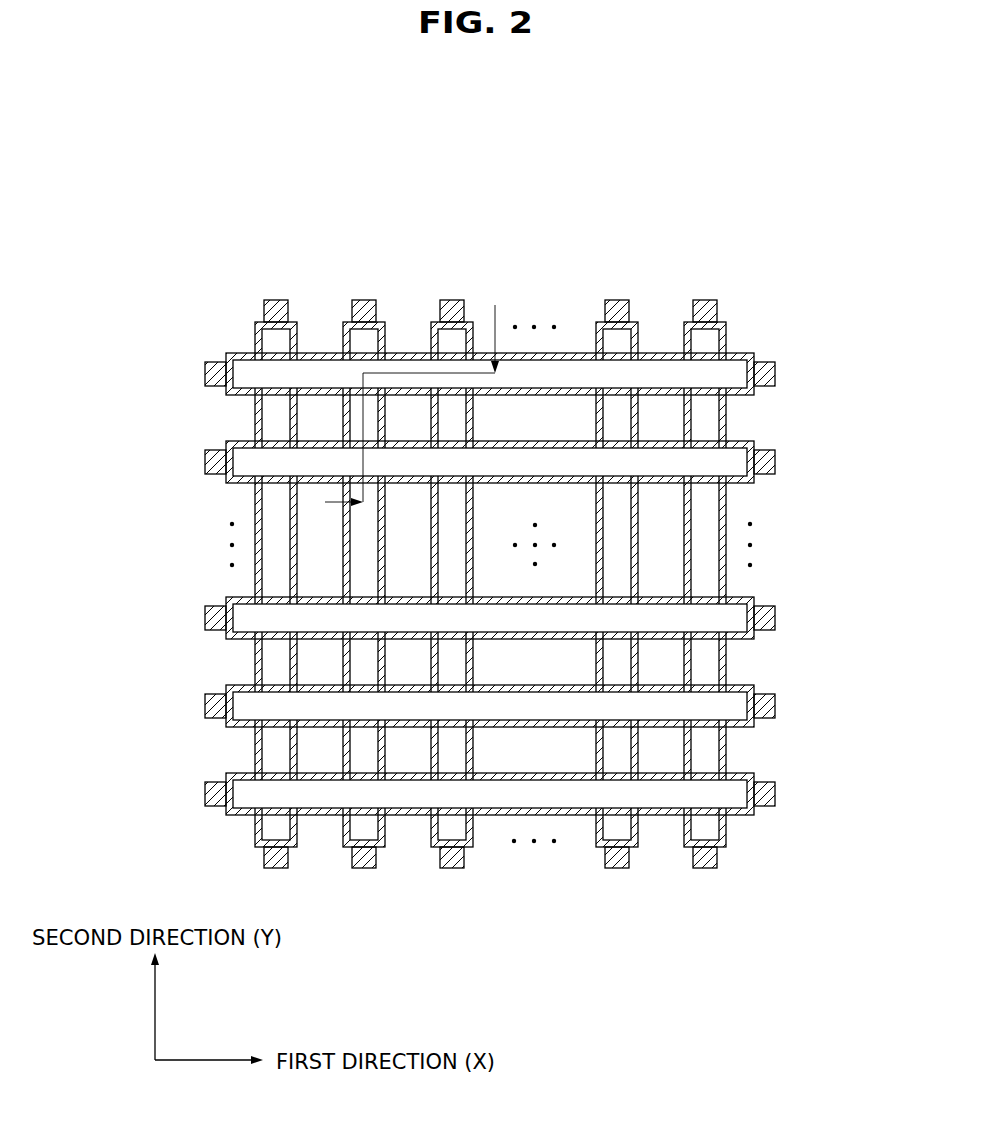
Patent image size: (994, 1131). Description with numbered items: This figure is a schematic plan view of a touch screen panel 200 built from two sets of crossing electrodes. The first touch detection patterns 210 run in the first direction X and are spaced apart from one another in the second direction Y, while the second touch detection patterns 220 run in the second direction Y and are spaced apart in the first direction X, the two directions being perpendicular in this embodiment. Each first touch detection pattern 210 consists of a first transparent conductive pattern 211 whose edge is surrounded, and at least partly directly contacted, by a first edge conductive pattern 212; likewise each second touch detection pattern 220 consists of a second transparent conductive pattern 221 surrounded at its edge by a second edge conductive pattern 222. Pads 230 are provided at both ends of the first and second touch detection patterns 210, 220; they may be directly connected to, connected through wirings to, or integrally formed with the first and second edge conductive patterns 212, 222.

The touch screen panel 200 is at (757, 233).
The first touch detection patterns 210 is at (405, 242).
The first transparent conductive pattern 211 is at (324, 371).
The first edge conductive pattern 212 is at (399, 355).
The second touch detection patterns 220 is at (847, 482).
The second transparent conductive pattern 221 is at (707, 511).
The second edge conductive pattern 222 is at (723, 540).
The pads 230 is at (717, 312).